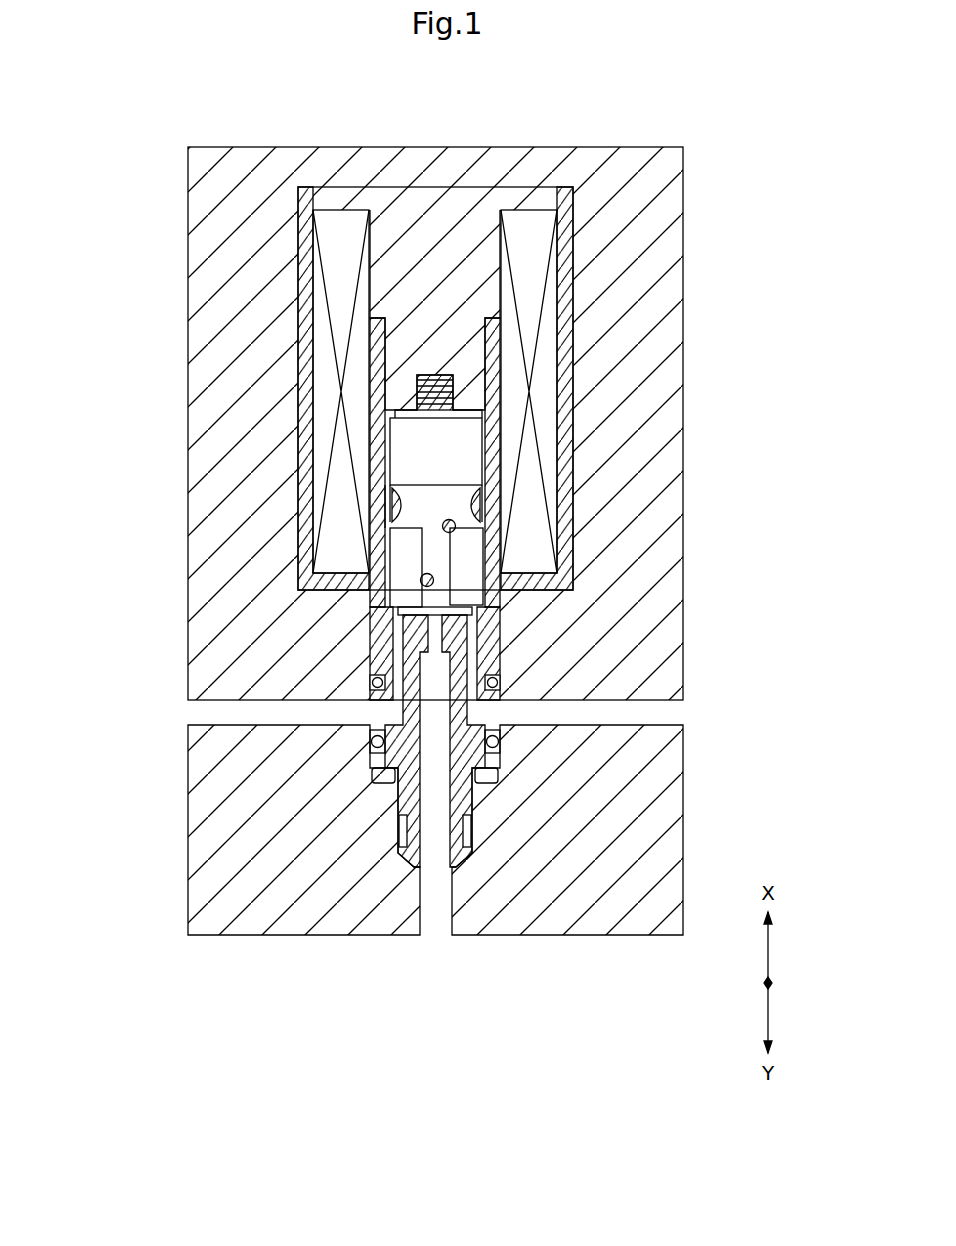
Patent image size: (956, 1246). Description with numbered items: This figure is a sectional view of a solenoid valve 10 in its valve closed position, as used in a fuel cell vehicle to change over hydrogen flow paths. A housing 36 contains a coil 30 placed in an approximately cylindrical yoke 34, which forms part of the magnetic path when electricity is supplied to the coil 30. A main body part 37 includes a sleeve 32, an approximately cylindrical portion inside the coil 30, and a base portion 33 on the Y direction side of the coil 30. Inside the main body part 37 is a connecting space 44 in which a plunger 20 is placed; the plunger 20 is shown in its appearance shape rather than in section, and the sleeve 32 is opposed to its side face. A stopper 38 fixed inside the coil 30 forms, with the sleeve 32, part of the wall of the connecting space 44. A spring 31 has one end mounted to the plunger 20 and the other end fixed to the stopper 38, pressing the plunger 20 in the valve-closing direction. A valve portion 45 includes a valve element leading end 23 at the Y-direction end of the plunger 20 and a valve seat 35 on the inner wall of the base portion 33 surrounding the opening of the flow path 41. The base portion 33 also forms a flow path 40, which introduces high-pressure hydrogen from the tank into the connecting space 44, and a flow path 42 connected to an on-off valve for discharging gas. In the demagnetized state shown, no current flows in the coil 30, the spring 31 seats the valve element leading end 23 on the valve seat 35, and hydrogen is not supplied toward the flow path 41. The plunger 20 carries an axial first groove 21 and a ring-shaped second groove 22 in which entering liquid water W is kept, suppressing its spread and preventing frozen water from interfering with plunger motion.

The solenoid valve 10 is at (640, 131).
The housing 36 is at (662, 247).
The stopper 38 is at (400, 258).
The yoke 34 is at (300, 297).
The connecting space 44 is at (300, 528).
The coil 30 is at (326, 385).
The spring 31 is at (456, 383).
The plunger 20 is at (470, 452).
The second groove 22 is at (456, 508).
The first groove 21 is at (495, 577).
The valve element leading end 23 is at (472, 612).
The valve seat 35 is at (502, 638).
The valve portion 45 is at (752, 583).
The sleeve 32 is at (367, 562).
The base portion 33 is at (398, 727).
The main body part 37 is at (114, 553).
The entering liquid water W is at (392, 493).
The flow path 40 is at (198, 724).
The flow path 42 is at (665, 722).
The flow path 41 is at (440, 903).